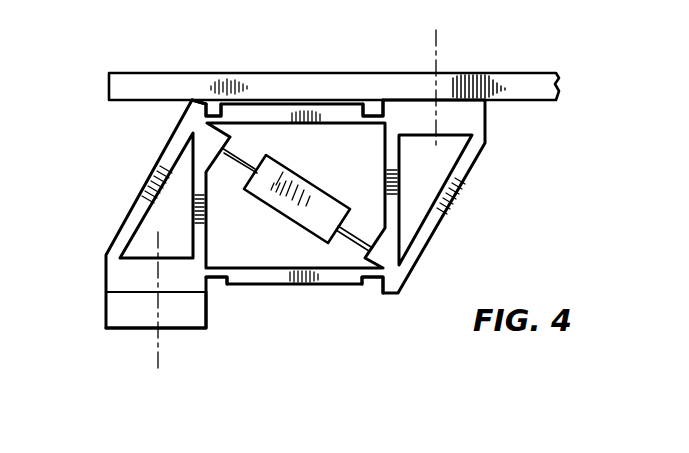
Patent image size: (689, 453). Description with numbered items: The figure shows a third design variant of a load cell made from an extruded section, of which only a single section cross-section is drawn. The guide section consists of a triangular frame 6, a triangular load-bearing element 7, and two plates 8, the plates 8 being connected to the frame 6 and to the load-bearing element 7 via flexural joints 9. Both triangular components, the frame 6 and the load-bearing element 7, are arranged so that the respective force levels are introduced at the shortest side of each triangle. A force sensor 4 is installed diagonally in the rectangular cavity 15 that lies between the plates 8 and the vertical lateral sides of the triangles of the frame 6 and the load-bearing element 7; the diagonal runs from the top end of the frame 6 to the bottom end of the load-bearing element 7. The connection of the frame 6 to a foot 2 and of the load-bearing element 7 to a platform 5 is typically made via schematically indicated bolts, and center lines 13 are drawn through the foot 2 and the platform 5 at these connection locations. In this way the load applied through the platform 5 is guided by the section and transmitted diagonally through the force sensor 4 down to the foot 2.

The foot 2 is at (117, 307).
The force sensor 4 is at (288, 177).
The platform 5 is at (560, 82).
The triangular frame 6 is at (123, 277).
The triangular load-bearing element 7 is at (465, 117).
The plates 8 is at (282, 115).
The flexural joints 9 is at (216, 112).
The center lines 13 is at (437, 72).
The rectangular cavity 15 is at (367, 190).